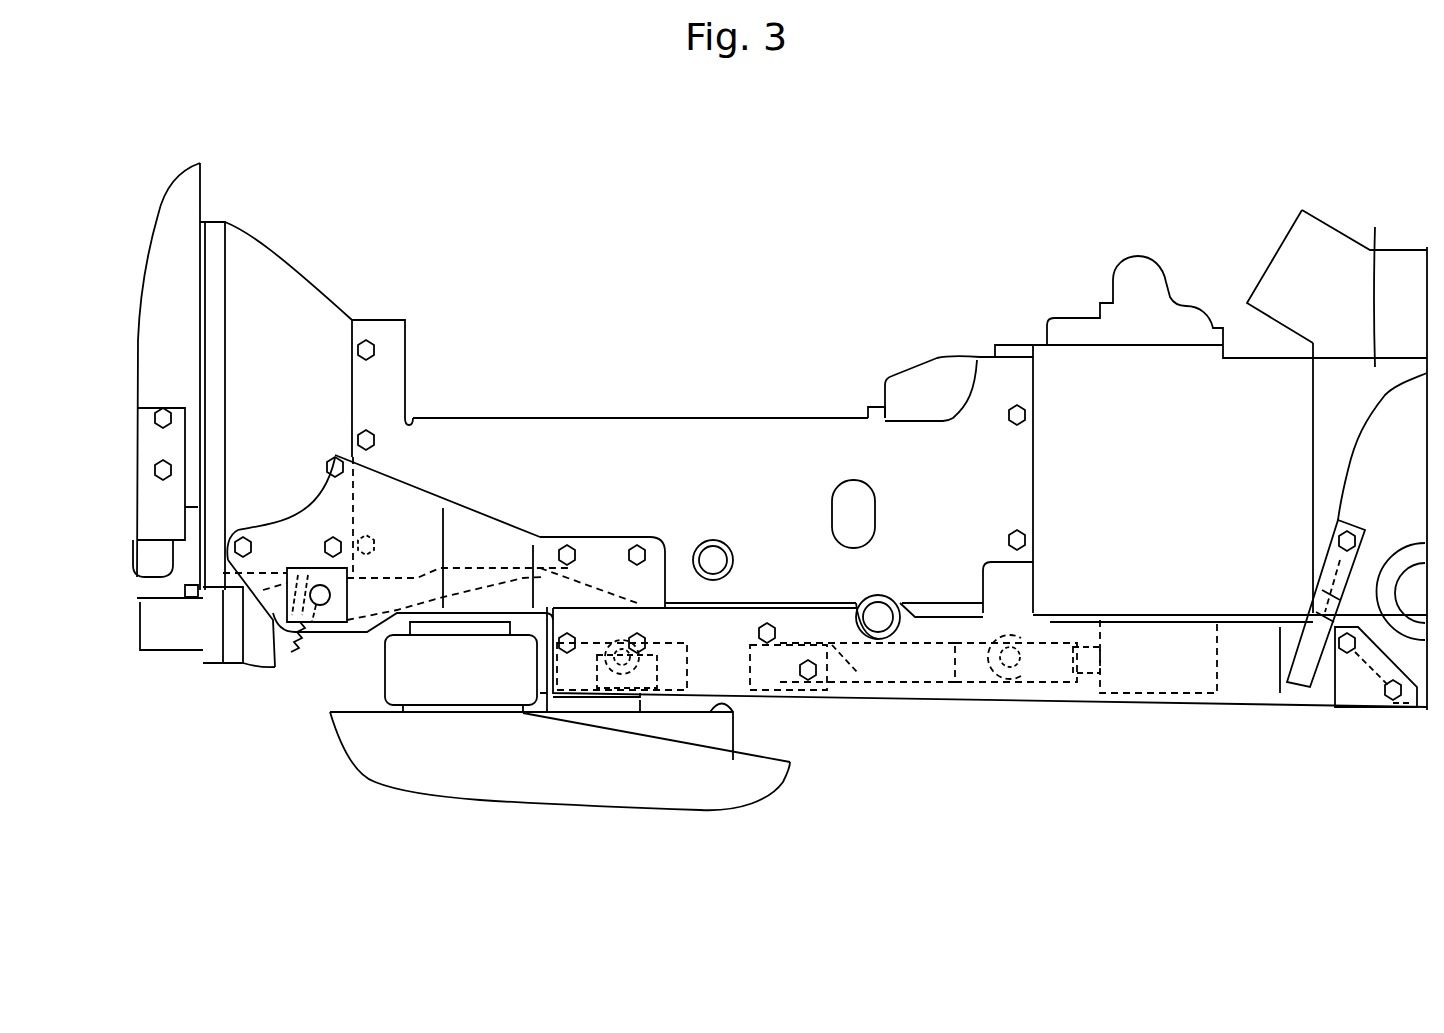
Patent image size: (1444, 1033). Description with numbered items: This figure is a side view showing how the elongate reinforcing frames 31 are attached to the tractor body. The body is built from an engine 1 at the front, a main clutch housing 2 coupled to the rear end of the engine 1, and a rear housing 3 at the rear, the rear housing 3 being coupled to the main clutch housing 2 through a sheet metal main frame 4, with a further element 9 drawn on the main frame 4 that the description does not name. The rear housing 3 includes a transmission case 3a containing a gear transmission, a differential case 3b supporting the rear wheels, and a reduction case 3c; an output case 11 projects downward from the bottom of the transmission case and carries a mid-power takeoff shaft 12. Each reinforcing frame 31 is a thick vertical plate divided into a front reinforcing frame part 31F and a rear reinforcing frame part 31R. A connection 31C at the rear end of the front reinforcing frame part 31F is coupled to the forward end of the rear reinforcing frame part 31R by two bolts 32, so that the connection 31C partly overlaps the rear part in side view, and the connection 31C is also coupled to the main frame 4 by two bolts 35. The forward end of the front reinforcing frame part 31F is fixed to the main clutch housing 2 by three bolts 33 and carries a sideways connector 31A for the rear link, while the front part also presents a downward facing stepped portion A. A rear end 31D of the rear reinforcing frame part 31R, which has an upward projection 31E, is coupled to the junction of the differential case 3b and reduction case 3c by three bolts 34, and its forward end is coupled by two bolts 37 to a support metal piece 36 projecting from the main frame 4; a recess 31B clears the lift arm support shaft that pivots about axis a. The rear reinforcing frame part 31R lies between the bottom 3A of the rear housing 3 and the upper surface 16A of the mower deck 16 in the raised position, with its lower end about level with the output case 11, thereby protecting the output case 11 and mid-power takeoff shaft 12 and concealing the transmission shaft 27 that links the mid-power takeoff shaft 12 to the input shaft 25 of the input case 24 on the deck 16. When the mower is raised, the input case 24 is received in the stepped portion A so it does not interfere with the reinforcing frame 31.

The engine 1 is at (203, 196).
The main clutch housing 2 is at (280, 252).
The rear housing 3 is at (1257, 615).
The transmission case 3a is at (1085, 358).
The bottom of rear housing 3A is at (1150, 622).
The differential case 3b is at (1337, 282).
The reduction case 3c is at (1350, 468).
The main frame 4 is at (697, 418).
The frame boss 9 is at (930, 372).
The output case 11 is at (1163, 690).
The mid-power takeoff shaft 12 is at (1088, 680).
The deck 16 is at (390, 772).
The upper surface of deck 16A is at (730, 713).
The input case 24 is at (400, 675).
The input shaft 25 is at (553, 712).
The transmission shaft 27 is at (928, 672).
The reinforcing frame 31 is at (972, 702).
The connector 31A is at (273, 618).
The recess 31B is at (880, 625).
The connection 31C is at (640, 585).
The rear end 31D is at (1330, 680).
The projection 31E is at (1330, 580).
The front reinforcing frame part 31F is at (485, 522).
The rear reinforcing frame part 31R is at (1263, 700).
The bolts 32 is at (622, 660).
The bolts 33 is at (328, 458).
The bolts 34 is at (1338, 535).
The bolts 35 is at (640, 548).
The support metal piece 36 is at (825, 640).
The bolts 37 is at (808, 682).
The axis a is at (880, 617).
The stepped portion A is at (487, 622).